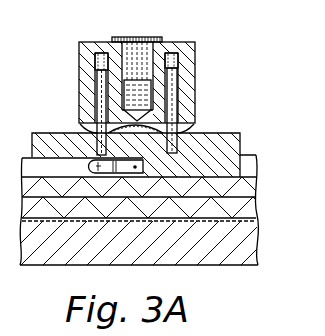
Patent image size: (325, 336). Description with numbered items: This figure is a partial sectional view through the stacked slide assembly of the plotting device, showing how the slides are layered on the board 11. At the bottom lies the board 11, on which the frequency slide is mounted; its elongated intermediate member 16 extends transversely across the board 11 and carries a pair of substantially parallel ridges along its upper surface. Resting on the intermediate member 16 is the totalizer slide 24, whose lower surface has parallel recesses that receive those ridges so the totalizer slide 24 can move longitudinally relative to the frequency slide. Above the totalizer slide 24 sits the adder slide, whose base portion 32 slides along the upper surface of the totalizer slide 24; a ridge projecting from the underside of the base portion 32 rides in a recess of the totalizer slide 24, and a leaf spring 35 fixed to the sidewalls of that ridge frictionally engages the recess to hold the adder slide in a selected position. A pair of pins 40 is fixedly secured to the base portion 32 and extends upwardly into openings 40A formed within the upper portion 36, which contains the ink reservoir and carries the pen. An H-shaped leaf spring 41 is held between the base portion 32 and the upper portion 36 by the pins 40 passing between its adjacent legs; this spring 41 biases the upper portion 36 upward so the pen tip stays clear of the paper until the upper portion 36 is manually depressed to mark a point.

The upper portion 36 is at (88, 45).
The pins 40 is at (100, 86).
The openings 40A is at (177, 60).
The spring 41 is at (178, 133).
The base portion 32 is at (240, 140).
The leaf spring 35 is at (88, 160).
The totalizer slide 24 is at (243, 190).
The intermediate member 16 is at (245, 211).
The board 11 is at (232, 253).